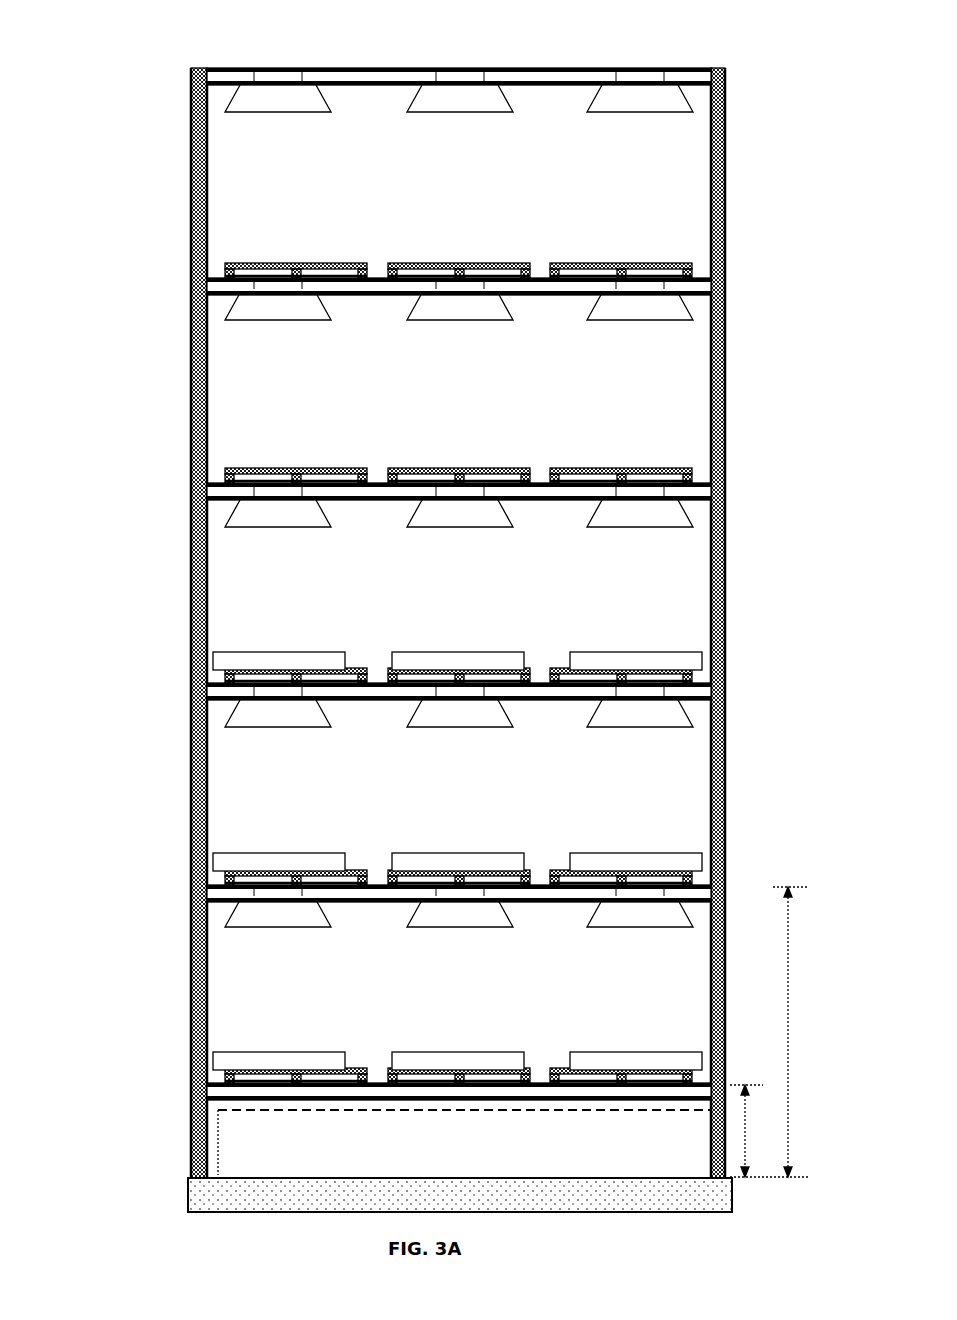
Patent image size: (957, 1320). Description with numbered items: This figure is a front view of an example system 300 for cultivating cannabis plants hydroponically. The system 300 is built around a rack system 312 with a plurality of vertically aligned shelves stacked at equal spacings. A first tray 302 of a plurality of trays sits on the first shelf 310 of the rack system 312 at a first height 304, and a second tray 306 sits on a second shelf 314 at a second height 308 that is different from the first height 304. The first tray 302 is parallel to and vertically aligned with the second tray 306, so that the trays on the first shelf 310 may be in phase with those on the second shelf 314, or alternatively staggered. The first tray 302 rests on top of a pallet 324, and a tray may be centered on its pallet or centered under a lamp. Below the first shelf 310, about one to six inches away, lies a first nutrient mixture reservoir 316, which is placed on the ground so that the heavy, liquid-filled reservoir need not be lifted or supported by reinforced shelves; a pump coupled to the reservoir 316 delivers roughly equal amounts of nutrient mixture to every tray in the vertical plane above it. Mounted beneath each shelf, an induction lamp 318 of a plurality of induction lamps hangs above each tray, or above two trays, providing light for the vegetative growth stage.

The system 300 is at (418, 611).
The first tray 302 is at (268, 1062).
The first height 304 is at (745, 1130).
The second tray 306 is at (268, 863).
The second height 308 is at (790, 940).
The first shelf 310 is at (200, 1085).
The rack system 312 is at (725, 80).
The second shelf 314 is at (200, 885).
The first nutrient mixture reservoir 316 is at (228, 1165).
The induction lamp 318 is at (252, 305).
The pallet 324 is at (358, 1072).